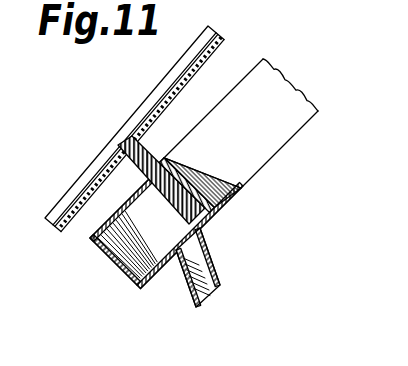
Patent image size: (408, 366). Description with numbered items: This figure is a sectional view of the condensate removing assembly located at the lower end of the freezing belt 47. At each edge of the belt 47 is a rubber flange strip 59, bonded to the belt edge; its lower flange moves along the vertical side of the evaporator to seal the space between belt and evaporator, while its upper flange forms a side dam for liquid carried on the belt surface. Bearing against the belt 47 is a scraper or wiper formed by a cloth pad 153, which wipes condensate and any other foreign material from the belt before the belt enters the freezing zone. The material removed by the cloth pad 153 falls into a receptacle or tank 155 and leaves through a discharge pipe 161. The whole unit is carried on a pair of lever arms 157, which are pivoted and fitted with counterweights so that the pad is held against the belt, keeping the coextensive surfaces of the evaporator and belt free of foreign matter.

The belt 47 is at (60, 198).
The rubber flange strip 59 is at (84, 174).
The cloth pad 153 is at (135, 164).
The receptacle or tank 155 is at (102, 254).
The lever arms 157 is at (277, 138).
The discharge pipe 161 is at (207, 264).